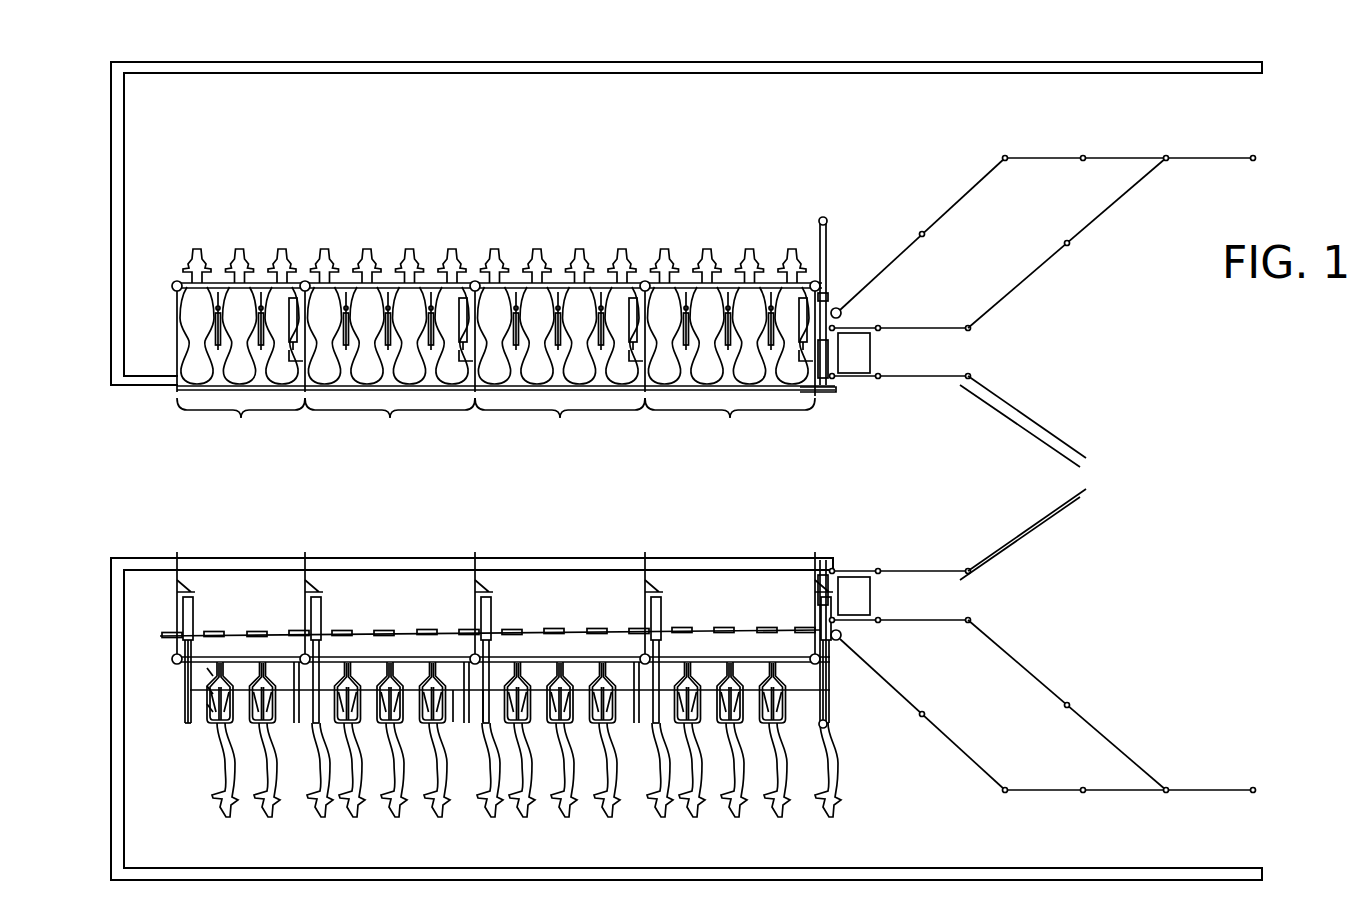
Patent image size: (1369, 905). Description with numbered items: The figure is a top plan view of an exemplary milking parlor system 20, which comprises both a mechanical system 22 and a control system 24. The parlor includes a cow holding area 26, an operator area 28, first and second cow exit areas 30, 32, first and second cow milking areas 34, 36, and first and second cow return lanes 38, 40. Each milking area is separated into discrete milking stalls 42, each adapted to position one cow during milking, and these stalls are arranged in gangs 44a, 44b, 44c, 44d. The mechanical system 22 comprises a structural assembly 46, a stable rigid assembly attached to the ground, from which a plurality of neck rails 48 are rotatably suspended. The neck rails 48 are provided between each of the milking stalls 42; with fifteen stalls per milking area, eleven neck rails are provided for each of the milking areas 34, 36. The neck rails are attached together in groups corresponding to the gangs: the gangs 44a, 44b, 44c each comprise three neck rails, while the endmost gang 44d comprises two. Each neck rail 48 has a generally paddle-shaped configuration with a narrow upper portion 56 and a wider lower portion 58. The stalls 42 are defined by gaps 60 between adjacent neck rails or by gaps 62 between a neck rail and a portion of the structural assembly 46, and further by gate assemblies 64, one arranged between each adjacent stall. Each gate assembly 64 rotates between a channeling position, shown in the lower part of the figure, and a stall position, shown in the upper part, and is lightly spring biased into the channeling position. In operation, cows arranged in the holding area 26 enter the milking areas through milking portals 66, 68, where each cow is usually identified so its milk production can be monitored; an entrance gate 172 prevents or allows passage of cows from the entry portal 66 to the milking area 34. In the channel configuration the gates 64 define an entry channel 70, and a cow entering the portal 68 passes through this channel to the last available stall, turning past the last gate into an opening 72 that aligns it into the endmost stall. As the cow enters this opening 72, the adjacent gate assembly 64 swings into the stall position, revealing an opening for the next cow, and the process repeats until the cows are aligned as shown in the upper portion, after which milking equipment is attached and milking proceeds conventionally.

The milking parlor system 20 is at (990, 46).
The mechanical system 22 is at (162, 301).
The control system 24 is at (162, 612).
The cow holding area 26 is at (1208, 463).
The operator area 28 is at (513, 490).
The first cow exit area 30 is at (568, 170).
The second cow exit area 32 is at (511, 857).
The first cow milking area 34 is at (712, 238).
The second cow milking area 36 is at (838, 740).
The first cow return lane 38 is at (1156, 133).
The second cow return lane 40 is at (1098, 850).
The milking stall 42 is at (200, 398).
The gang 44a is at (730, 425).
The gang 44b is at (560, 425).
The gang 44c is at (390, 425).
The endmost gang 44d is at (241, 425).
The structural assembly 46 is at (848, 553).
The neck rail 48 is at (205, 690).
The narrow upper portion 56 is at (208, 672).
The wider lower portion 58 is at (208, 708).
The gap 60 is at (372, 682).
The gap 62 is at (452, 684).
The gate assembly 64 is at (258, 306).
The milking portal 66 is at (968, 358).
The milking portal 68 is at (965, 604).
The entry channel 70 is at (506, 600).
The opening 72 is at (200, 600).
The entrance gate 172 is at (840, 274).